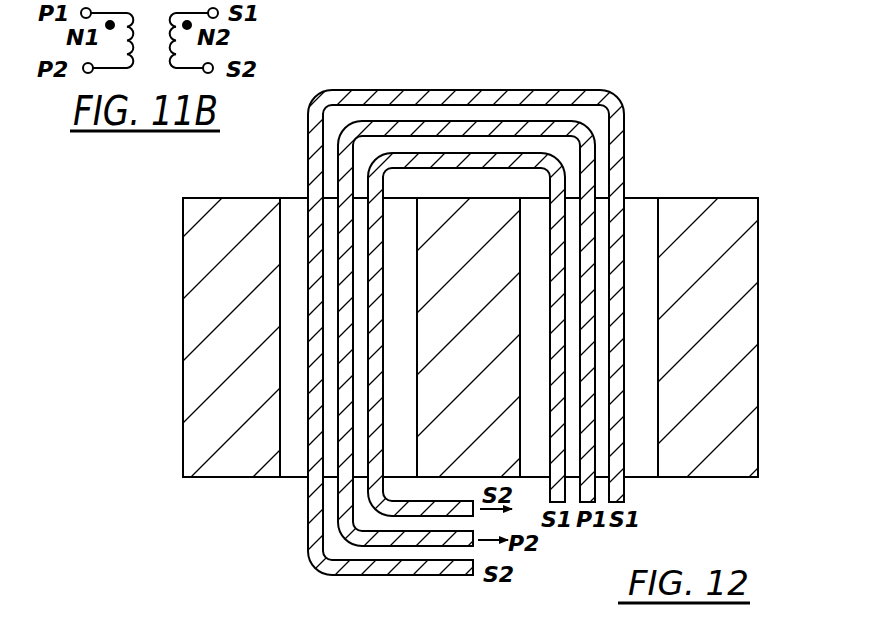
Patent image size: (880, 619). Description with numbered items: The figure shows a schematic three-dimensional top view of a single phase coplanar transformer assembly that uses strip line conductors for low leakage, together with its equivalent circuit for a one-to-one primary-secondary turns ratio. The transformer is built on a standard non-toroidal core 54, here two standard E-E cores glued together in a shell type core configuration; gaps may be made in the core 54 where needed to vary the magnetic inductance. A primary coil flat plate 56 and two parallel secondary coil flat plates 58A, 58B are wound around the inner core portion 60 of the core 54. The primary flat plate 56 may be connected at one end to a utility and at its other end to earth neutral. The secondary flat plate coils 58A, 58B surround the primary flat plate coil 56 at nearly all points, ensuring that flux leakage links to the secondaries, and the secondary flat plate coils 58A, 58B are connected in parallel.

The core 54 is at (737, 197).
The primary coil flat plate 56 is at (518, 309).
The secondary coil flat plate 58A is at (625, 170).
The secondary coil flat plate 58B is at (585, 158).
The inner core portion 60 is at (441, 202).